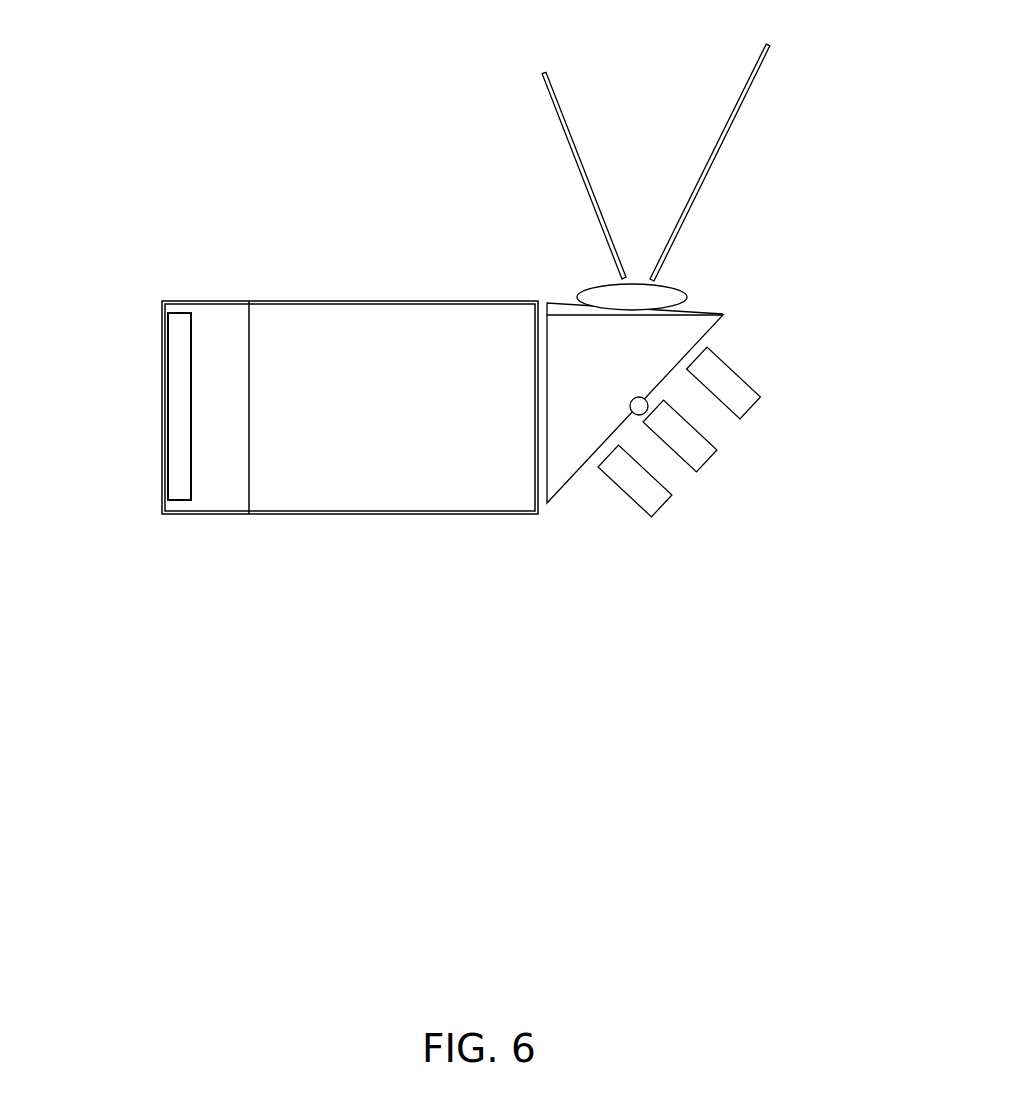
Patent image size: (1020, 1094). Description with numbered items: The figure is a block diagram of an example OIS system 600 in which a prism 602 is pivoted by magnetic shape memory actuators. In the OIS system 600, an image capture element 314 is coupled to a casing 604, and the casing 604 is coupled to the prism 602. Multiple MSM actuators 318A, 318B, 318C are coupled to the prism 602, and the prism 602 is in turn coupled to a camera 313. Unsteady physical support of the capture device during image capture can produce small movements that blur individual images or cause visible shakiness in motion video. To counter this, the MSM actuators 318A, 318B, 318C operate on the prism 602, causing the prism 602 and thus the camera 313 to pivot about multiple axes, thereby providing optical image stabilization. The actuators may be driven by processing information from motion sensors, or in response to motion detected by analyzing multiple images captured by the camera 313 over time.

The OIS system 600 is at (497, 1014).
The camera 313 is at (587, 285).
The image capture element 314 is at (287, 452).
The MSM actuator 318A is at (753, 407).
The MSM actuator 318B is at (707, 463).
The MSM actuator 318C is at (660, 510).
The prism 602 is at (707, 313).
The casing 604 is at (350, 514).